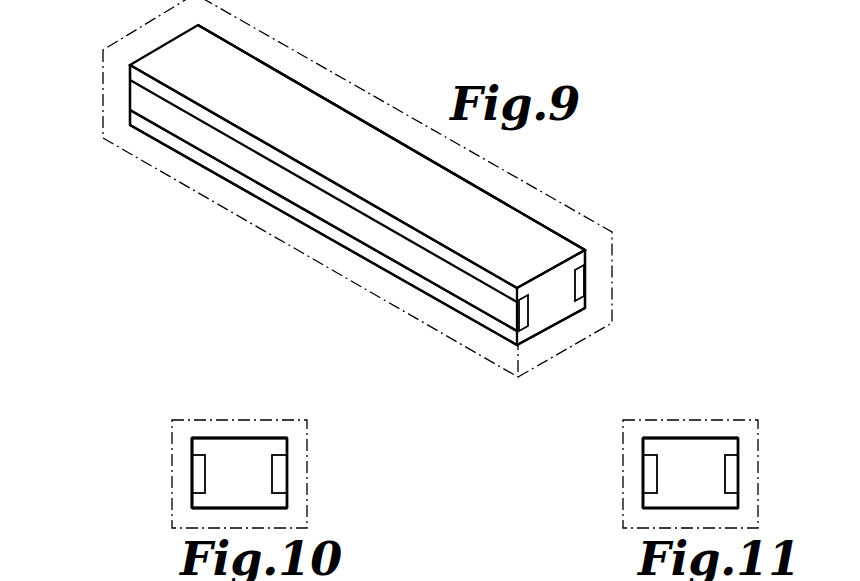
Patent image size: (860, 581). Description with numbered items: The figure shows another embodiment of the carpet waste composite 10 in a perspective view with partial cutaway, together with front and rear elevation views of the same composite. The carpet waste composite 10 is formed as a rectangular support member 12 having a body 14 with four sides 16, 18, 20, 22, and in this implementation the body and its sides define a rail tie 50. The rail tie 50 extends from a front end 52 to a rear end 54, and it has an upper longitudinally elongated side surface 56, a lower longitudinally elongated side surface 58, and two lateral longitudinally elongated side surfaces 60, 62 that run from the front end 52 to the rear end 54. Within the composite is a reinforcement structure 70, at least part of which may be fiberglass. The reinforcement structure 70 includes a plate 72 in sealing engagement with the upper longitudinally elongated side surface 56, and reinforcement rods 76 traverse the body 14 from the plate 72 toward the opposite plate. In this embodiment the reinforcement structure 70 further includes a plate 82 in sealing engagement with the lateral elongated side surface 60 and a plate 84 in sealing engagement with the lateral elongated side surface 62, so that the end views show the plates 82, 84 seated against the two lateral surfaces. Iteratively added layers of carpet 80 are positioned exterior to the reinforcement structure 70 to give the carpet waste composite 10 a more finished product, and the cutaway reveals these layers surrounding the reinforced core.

In FIG. 9, the carpet waste composite 10 is at (418, 86).
In FIG. 10, the carpet waste composite 10 is at (298, 398).
In FIG. 11, the carpet waste composite 10 is at (746, 400).
In FIG. 10, the rectangular support member 12 is at (290, 505).
In FIG. 9, the body 14 is at (248, 192).
In FIG. 10, the body 14 is at (192, 482).
In FIG. 11, the body 14 is at (647, 482).
In FIG. 9, the side 16 is at (528, 228).
In FIG. 10, the side 16 is at (245, 437).
In FIG. 11, the side 16 is at (687, 438).
In FIG. 10, the side 18 is at (287, 445).
In FIG. 11, the side 18 is at (643, 447).
In FIG. 9, the side 20 is at (568, 313).
In FIG. 10, the side 20 is at (284, 509).
In FIG. 11, the side 20 is at (647, 509).
In FIG. 10, the side 22 is at (192, 464).
In FIG. 9, the rail tie 50 is at (357, 111).
In FIG. 10, the rail tie 50 is at (263, 433).
In FIG. 11, the rail tie 50 is at (665, 433).
In FIG. 9, the front end 52 is at (558, 301).
In FIG. 9, the rear end 54 is at (128, 89).
In FIG. 9, the upper longitudinally elongated side surface 56 is at (507, 207).
In FIG. 10, the upper longitudinally elongated side surface 56 is at (228, 437).
In FIG. 11, the upper longitudinally elongated side surface 56 is at (702, 438).
In FIG. 9, the lower longitudinally elongated side surface 58 is at (553, 325).
In FIG. 10, the lower longitudinally elongated side surface 58 is at (194, 509).
In FIG. 11, the lower longitudinally elongated side surface 58 is at (734, 509).
In FIG. 9, the lateral longitudinally elongated side surface 60 is at (588, 249).
In FIG. 10, the lateral longitudinally elongated side surface 60 is at (287, 465).
In FIG. 11, the lateral longitudinally elongated side surface 60 is at (643, 465).
In FIG. 9, the lateral longitudinally elongated side surface 62 is at (496, 335).
In FIG. 10, the lateral longitudinally elongated side surface 62 is at (192, 447).
In FIG. 11, the lateral longitudinally elongated side surface 62 is at (738, 445).
In FIG. 9, the reinforcement structure 70 is at (224, 143).
In FIG. 10, the reinforcement structure 70 is at (188, 493).
In FIG. 11, the reinforcement structure 70 is at (735, 472).
In FIG. 9, the plate 72 is at (473, 222).
In FIG. 9, the reinforcement rods 76 is at (305, 127).
In FIG. 9, the layers of carpet 80 is at (500, 168).
In FIG. 10, the layers of carpet 80 is at (307, 425).
In FIG. 11, the layers of carpet 80 is at (690, 474).
In FIG. 9, the plate 82 is at (586, 276).
In FIG. 10, the plate 82 is at (284, 483).
In FIG. 11, the plate 82 is at (650, 488).
In FIG. 9, the plate 84 is at (447, 279).
In FIG. 10, the plate 84 is at (200, 453).
In FIG. 11, the plate 84 is at (735, 483).